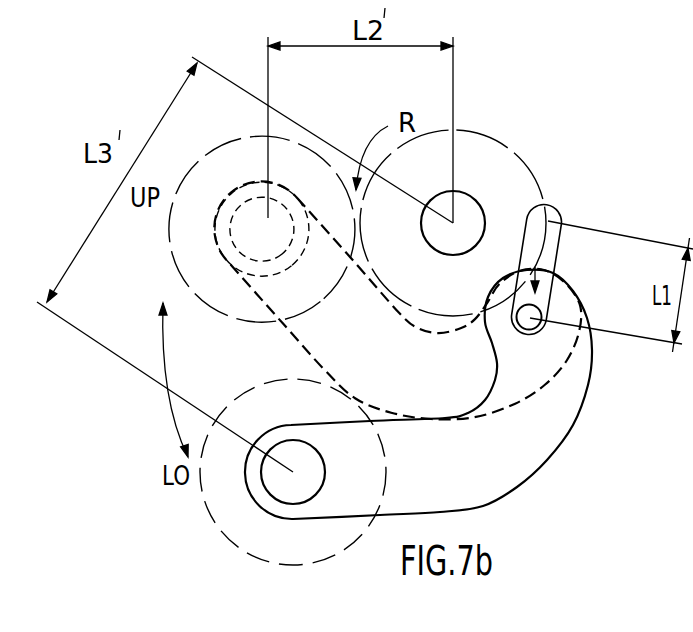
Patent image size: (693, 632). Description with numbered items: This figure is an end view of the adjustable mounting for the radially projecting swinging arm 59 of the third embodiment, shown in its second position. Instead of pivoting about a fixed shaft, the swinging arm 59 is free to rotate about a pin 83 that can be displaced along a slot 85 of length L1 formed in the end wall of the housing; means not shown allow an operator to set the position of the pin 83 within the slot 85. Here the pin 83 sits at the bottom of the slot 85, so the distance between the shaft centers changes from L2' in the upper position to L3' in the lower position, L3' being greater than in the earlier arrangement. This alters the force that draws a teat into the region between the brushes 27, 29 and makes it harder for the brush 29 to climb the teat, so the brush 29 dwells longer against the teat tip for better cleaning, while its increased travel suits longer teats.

The brush 27 is at (506, 152).
The brush 29 is at (277, 557).
The swinging arm 59 is at (604, 461).
The pin 83 is at (534, 331).
The slot 85 is at (552, 224).